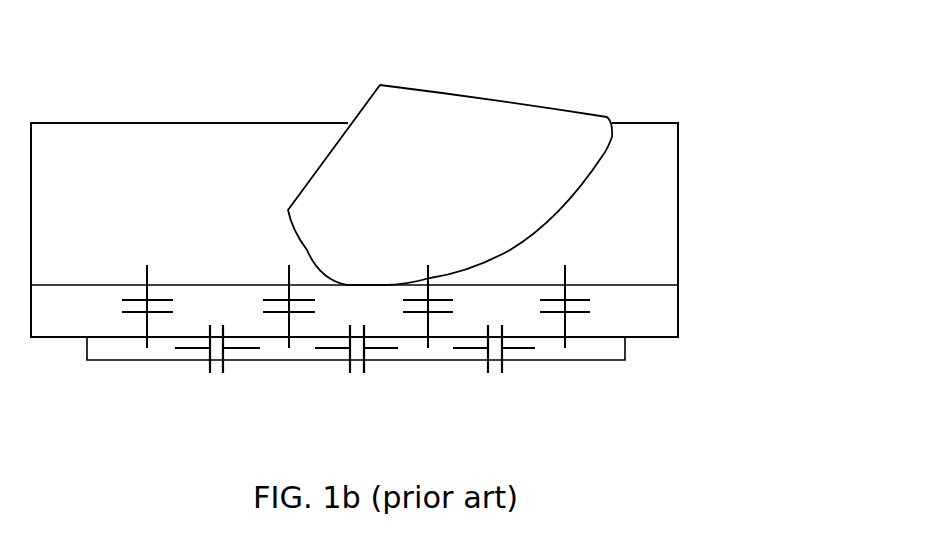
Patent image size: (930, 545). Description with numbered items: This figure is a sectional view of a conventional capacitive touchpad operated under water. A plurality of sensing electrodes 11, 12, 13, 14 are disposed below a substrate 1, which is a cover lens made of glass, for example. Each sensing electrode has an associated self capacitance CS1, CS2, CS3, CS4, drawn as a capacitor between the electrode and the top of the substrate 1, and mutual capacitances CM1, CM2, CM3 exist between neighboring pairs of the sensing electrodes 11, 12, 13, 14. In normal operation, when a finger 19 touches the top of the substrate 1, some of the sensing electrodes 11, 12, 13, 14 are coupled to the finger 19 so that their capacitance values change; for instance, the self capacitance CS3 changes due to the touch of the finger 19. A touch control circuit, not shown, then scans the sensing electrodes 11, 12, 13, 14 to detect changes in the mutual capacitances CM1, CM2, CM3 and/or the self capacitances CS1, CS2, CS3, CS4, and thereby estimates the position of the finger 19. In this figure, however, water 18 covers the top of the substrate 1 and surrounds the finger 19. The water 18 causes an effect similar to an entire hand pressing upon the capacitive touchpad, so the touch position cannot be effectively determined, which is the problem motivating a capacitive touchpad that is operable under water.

The substrate 1 is at (658, 312).
The water 18 is at (658, 168).
The finger 19 is at (596, 130).
The sensing electrode 11 is at (147, 352).
The sensing electrode 12 is at (289, 352).
The sensing electrode 13 is at (428, 352).
The sensing electrode 14 is at (565, 352).
The self capacitance CS1 is at (122, 300).
The self capacitance CS2 is at (263, 300).
The self capacitance CS3 is at (403, 300).
The self capacitance CS4 is at (540, 300).
The mutual capacitance CM1 is at (210, 377).
The mutual capacitance CM2 is at (350, 377).
The mutual capacitance CM3 is at (488, 377).